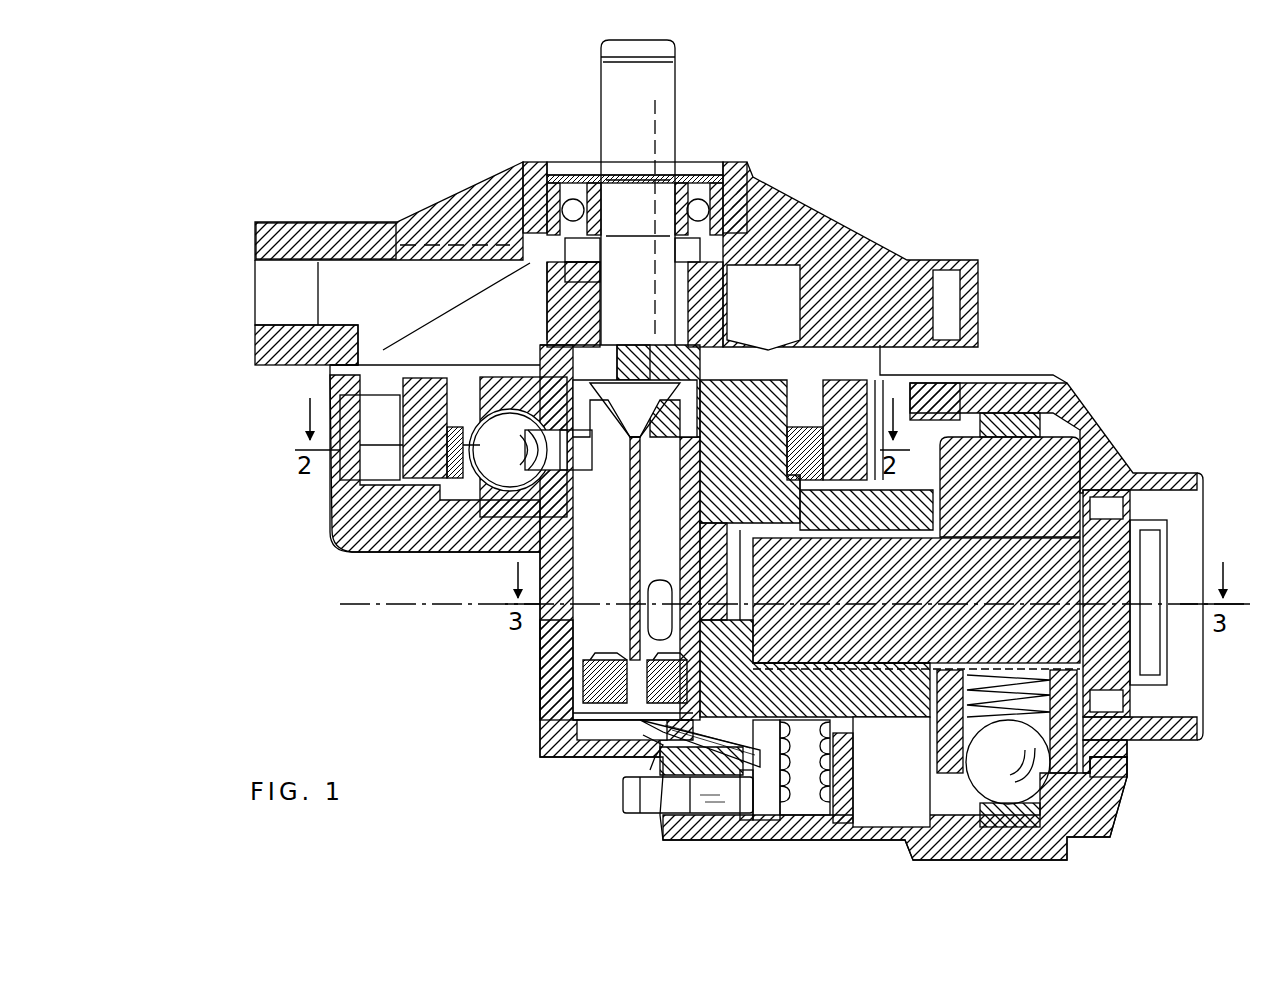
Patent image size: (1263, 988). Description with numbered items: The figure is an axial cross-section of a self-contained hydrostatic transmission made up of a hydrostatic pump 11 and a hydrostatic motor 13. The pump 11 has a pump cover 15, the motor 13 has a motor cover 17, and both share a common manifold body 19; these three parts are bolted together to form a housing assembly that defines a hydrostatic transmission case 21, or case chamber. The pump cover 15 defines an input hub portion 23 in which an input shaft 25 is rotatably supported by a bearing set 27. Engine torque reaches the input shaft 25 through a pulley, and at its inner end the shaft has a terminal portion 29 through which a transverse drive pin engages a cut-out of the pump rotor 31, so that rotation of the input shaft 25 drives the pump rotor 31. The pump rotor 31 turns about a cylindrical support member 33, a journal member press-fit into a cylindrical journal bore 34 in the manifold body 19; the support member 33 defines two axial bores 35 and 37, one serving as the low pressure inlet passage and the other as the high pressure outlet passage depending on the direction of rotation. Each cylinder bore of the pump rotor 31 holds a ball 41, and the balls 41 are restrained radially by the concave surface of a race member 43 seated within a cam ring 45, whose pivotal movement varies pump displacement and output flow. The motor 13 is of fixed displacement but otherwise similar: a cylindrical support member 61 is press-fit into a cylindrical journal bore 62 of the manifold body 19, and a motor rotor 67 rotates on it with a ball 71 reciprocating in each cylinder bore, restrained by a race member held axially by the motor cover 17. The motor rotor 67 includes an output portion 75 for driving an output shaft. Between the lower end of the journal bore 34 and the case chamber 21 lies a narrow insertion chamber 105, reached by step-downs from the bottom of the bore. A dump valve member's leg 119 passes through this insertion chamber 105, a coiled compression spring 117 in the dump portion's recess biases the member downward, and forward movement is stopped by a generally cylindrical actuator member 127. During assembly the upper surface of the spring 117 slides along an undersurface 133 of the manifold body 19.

The hydrostatic pump 11 is at (548, 156).
The hydrostatic motor 13 is at (1083, 392).
The pump cover 15 is at (370, 232).
The motor cover 17 is at (1095, 775).
The manifold body 19 is at (545, 740).
The hydrostatic transmission case 21 is at (870, 860).
The input hub portion 23 is at (740, 200).
The input shaft 25 is at (660, 130).
The bearing set 27 is at (700, 168).
The terminal portion 29 is at (660, 320).
The pump rotor 31 is at (555, 345).
The cylindrical support member 33 is at (690, 482).
The cylindrical journal bore 34 is at (560, 650).
The bore 35 is at (595, 608).
The bore 37 is at (670, 515).
The ball 41 is at (512, 418).
The race member 43 is at (435, 447).
The cam ring 45 is at (445, 395).
The cylindrical support member 61 is at (795, 603).
The cylindrical journal bore 62 is at (818, 660).
The motor rotor 67 is at (1070, 455).
The ball 71 is at (985, 820).
The output portion 75 is at (1160, 540).
The insertion chamber 105 is at (735, 722).
The coiled compression spring 117 is at (800, 800).
The leg 119 is at (650, 760).
The actuator member 127 is at (700, 815).
The undersurface 133 is at (872, 778).